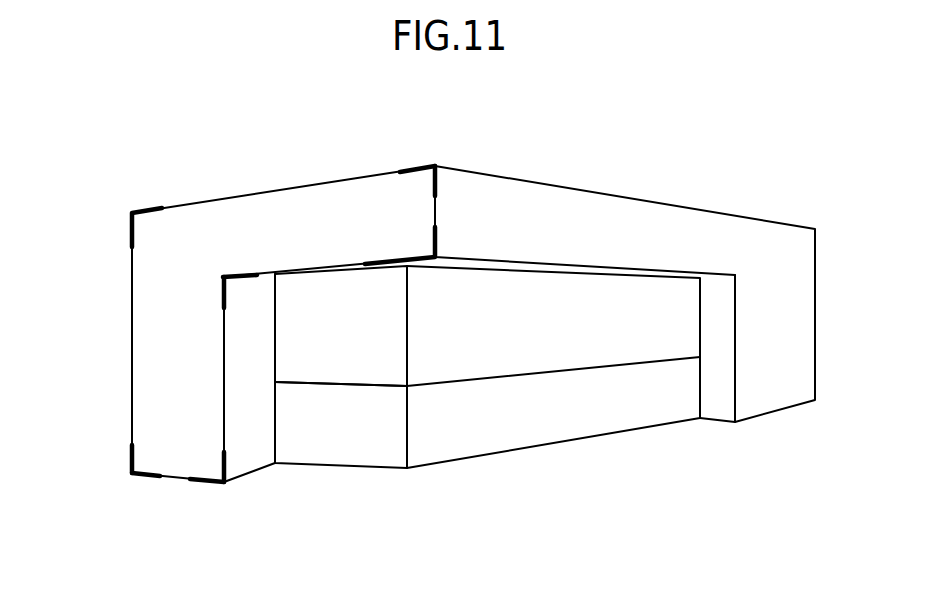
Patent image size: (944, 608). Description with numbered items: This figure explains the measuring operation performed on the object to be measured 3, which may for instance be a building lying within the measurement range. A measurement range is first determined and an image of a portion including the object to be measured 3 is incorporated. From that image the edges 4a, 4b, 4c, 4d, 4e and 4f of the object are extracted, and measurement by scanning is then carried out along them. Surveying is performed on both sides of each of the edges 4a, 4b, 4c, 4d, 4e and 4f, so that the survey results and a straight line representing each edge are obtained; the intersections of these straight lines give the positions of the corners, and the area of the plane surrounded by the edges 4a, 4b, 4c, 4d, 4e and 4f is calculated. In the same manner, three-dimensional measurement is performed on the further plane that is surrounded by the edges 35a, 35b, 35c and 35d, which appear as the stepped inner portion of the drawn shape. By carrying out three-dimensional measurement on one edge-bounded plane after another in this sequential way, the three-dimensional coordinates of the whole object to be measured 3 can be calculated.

The object to be measured 3 is at (602, 173).
The edge 4a is at (417, 164).
The edge 4b is at (437, 239).
The edge 4c is at (237, 275).
The edge 4d is at (227, 467).
The edge 4e is at (131, 229).
The edge 4f is at (147, 480).
The edge 35a is at (408, 326).
The edge 35b is at (363, 271).
The edge 35c is at (277, 357).
The edge 35d is at (357, 467).